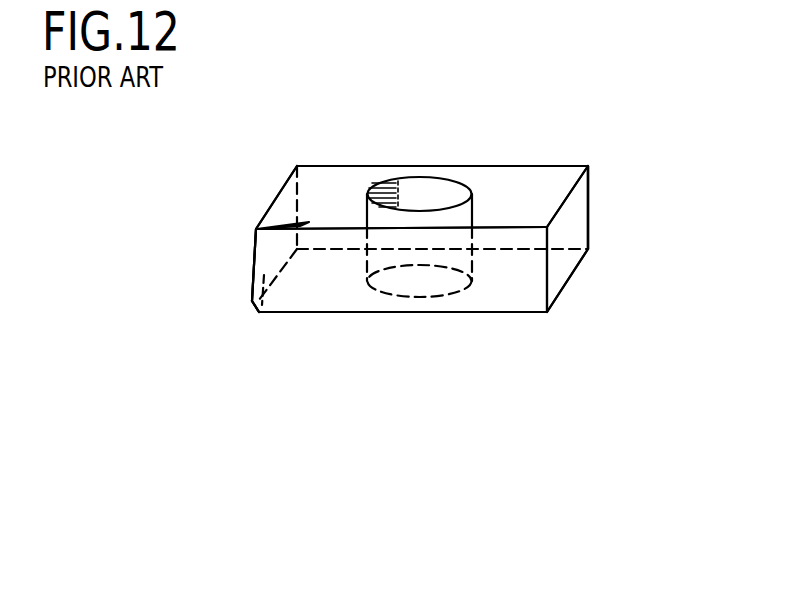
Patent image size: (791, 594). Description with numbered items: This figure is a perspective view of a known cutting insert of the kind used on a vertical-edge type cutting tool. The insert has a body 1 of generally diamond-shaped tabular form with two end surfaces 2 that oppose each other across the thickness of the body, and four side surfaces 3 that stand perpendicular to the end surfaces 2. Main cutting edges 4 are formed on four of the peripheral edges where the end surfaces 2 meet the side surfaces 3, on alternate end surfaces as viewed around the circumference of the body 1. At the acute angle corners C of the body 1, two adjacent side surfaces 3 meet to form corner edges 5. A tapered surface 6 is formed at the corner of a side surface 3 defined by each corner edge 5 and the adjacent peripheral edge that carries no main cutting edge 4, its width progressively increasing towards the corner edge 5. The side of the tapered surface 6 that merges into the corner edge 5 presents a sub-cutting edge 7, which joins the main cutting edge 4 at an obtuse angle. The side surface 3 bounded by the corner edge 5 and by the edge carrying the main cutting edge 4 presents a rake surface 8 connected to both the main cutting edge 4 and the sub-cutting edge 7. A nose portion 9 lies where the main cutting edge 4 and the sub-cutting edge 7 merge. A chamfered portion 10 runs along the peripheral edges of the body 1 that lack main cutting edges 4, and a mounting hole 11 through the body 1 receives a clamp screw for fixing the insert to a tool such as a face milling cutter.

The body 1 is at (506, 156).
The end surfaces 2 is at (523, 193).
The side surfaces 3 is at (570, 228).
The main cutting edges 4 is at (273, 208).
The corner edges 5 is at (252, 273).
The tapered surface 6 is at (253, 233).
The sub-cutting edge 7 is at (248, 230).
The rake surface 8 is at (251, 214).
The nose portion 9 is at (245, 221).
The chamfered portion 10 is at (284, 224).
The mounting hole 11 is at (410, 186).
The acute angle corners C is at (243, 283).